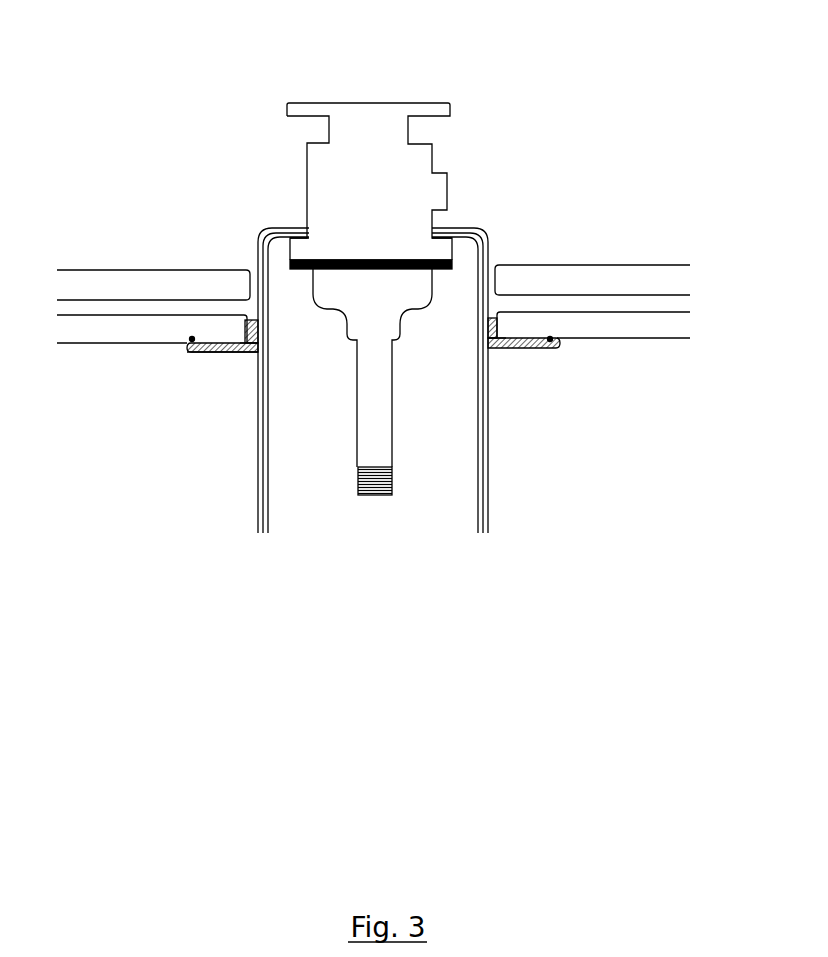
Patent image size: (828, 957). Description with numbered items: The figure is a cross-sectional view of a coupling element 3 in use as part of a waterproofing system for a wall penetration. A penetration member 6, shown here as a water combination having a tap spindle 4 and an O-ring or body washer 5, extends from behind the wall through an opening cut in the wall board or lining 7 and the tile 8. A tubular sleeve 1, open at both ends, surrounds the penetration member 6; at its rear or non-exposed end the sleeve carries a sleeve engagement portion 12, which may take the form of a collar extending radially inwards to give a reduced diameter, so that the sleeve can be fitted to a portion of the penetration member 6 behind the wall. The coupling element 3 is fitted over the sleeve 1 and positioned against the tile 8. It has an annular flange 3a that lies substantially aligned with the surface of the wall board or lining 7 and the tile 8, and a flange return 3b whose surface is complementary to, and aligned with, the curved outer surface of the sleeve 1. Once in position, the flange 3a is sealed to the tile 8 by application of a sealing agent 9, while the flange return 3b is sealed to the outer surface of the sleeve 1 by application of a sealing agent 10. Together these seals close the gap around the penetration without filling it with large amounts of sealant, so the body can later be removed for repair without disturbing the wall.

The sleeve 1 is at (260, 447).
The coupling element 3 is at (215, 352).
The flange 3a is at (192, 338).
The flange return 3b is at (248, 323).
The tap spindle 4 is at (365, 430).
The O-ring or body washer 5 is at (288, 260).
The penetration member 6 is at (373, 108).
The wall board or lining 7 is at (188, 272).
The tile 8 is at (122, 343).
The sealing agent 9 is at (197, 352).
The sealing agent 10 is at (255, 352).
The sleeve engagement portion 12 is at (453, 235).